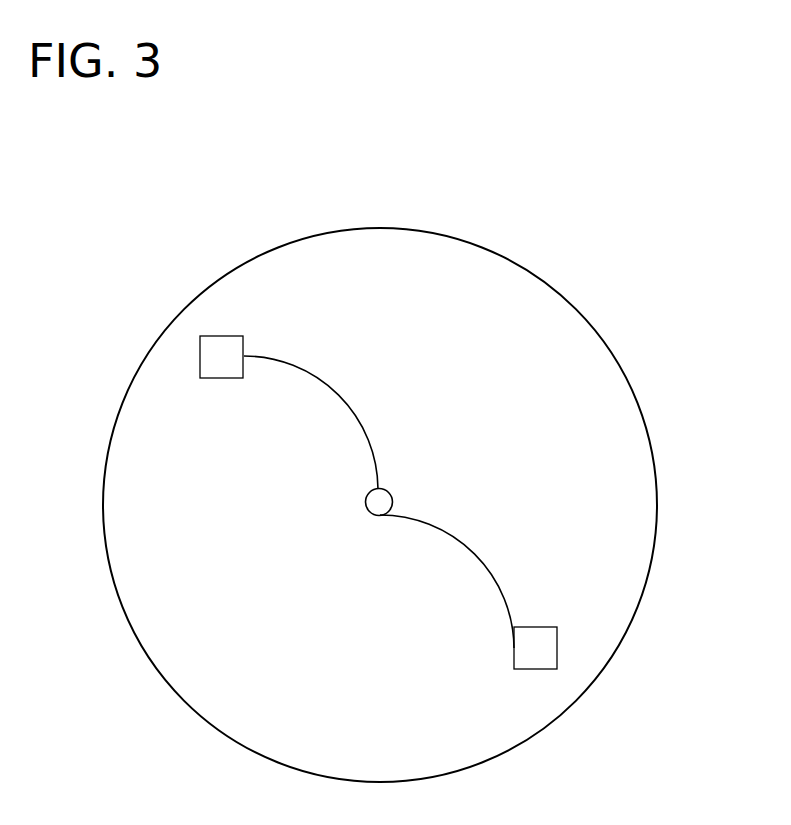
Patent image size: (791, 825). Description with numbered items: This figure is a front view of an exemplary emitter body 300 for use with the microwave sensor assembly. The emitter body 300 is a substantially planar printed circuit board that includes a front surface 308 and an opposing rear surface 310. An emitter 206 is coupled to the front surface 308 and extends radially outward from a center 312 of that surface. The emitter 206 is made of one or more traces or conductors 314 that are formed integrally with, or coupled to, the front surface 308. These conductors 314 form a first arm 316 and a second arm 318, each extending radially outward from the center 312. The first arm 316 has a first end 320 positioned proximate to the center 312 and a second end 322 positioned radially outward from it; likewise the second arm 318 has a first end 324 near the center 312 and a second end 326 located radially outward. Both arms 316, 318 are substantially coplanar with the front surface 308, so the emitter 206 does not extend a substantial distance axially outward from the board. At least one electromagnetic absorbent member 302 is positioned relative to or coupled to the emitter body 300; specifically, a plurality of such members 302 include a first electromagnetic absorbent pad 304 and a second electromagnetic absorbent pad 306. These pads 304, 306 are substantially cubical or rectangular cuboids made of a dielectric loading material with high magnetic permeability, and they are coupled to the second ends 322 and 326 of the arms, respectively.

The emitter body 300 is at (422, 224).
The electromagnetic absorbent member 302 is at (380, 507).
The first electromagnetic absorbent pad 304 is at (223, 378).
The second electromagnetic absorbent pad 306 is at (537, 669).
The front surface 308 is at (585, 378).
The rear surface 310 is at (610, 462).
The center 312 is at (392, 498).
The conductors 314 is at (379, 489).
The first arm 316 is at (357, 418).
The second arm 318 is at (396, 579).
The first end 320 is at (390, 480).
The second end 322 is at (253, 383).
The first end 324 is at (391, 522).
The second end 326 is at (505, 656).
The emitter 206 is at (396, 391).